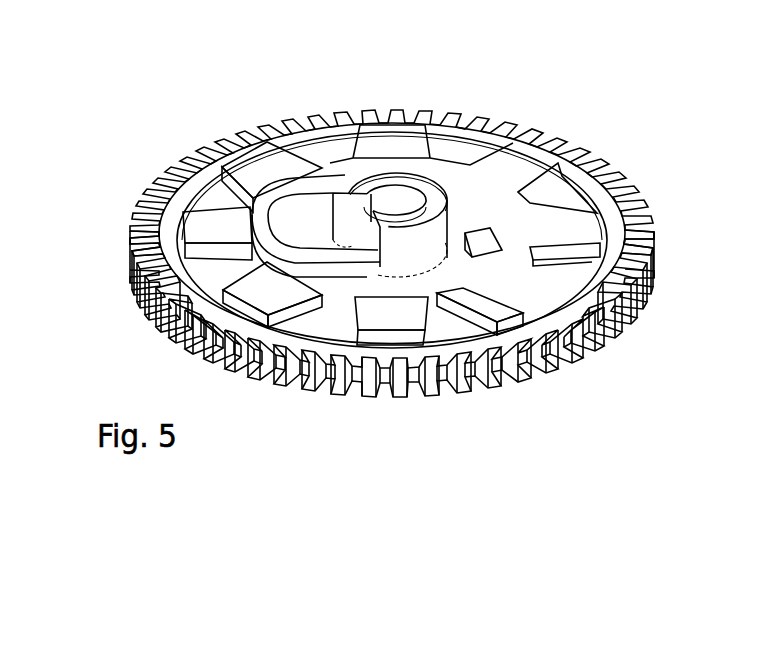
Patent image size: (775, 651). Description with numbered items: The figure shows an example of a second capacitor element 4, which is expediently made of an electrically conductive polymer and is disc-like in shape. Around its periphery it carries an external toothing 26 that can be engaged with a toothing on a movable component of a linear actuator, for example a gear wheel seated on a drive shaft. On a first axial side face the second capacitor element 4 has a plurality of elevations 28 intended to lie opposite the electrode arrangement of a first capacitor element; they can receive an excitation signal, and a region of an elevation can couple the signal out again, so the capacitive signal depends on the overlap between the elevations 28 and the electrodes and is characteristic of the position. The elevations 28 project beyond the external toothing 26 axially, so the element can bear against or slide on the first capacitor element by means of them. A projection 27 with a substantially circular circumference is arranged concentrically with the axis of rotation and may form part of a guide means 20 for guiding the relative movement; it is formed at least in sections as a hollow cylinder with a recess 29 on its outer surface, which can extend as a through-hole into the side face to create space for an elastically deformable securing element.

The second capacitor element 4 is at (182, 64).
The guide means 20 is at (480, 260).
The external toothing 26 is at (614, 141).
The projection 27 is at (448, 217).
The elevations 28 is at (248, 312).
The recess 29 is at (323, 226).